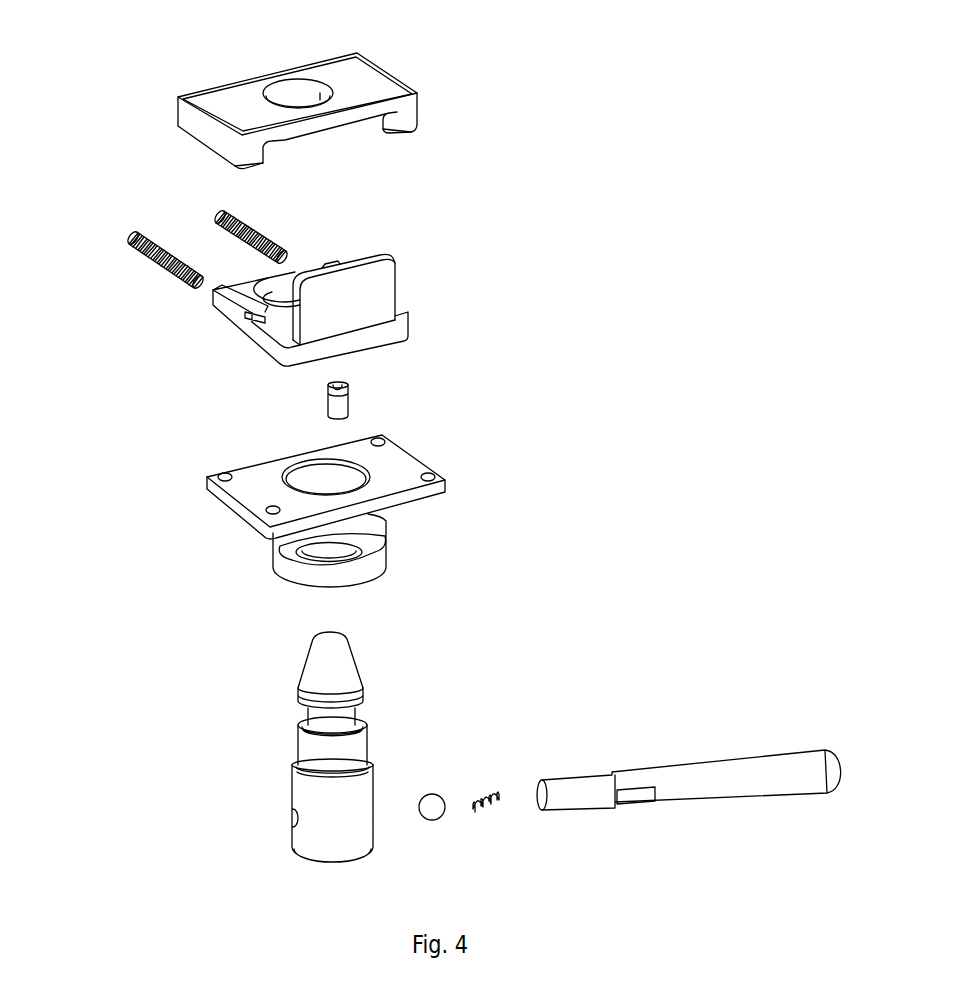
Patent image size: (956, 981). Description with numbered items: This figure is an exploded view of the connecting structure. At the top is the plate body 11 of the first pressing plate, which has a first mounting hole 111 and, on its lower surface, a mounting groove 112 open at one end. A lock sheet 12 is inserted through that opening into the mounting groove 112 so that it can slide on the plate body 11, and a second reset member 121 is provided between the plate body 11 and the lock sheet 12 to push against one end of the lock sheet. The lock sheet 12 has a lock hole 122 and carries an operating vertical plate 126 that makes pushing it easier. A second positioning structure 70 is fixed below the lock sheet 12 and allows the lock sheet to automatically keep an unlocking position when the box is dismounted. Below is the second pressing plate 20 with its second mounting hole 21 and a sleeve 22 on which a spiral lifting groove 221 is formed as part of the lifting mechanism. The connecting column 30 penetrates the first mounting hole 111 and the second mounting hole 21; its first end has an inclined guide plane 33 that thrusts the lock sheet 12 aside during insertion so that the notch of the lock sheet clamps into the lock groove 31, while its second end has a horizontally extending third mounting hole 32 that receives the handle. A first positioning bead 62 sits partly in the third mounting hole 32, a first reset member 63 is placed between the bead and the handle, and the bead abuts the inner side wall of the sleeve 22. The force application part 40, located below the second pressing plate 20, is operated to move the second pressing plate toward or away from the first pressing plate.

The plate body 11 is at (331, 89).
The first mounting hole 111 is at (297, 90).
The mounting groove 112 is at (348, 133).
The lock sheet 12 is at (304, 295).
The second reset member 121 is at (150, 250).
The lock hole 122 is at (250, 314).
The operating vertical plate 126 is at (368, 278).
The second positioning structure 70 is at (337, 402).
The second pressing plate 20 is at (319, 521).
The second mounting hole 21 is at (325, 478).
The sleeve 22 is at (347, 569).
The spiral lifting groove 221 is at (367, 552).
The connecting column 30 is at (326, 747).
The lock groove 31 is at (360, 718).
The third mounting hole 32 is at (293, 820).
The inclined guide plane 33 is at (302, 667).
The first positioning bead 62 is at (433, 810).
The first reset member 63 is at (490, 810).
The force application part 40 is at (717, 783).